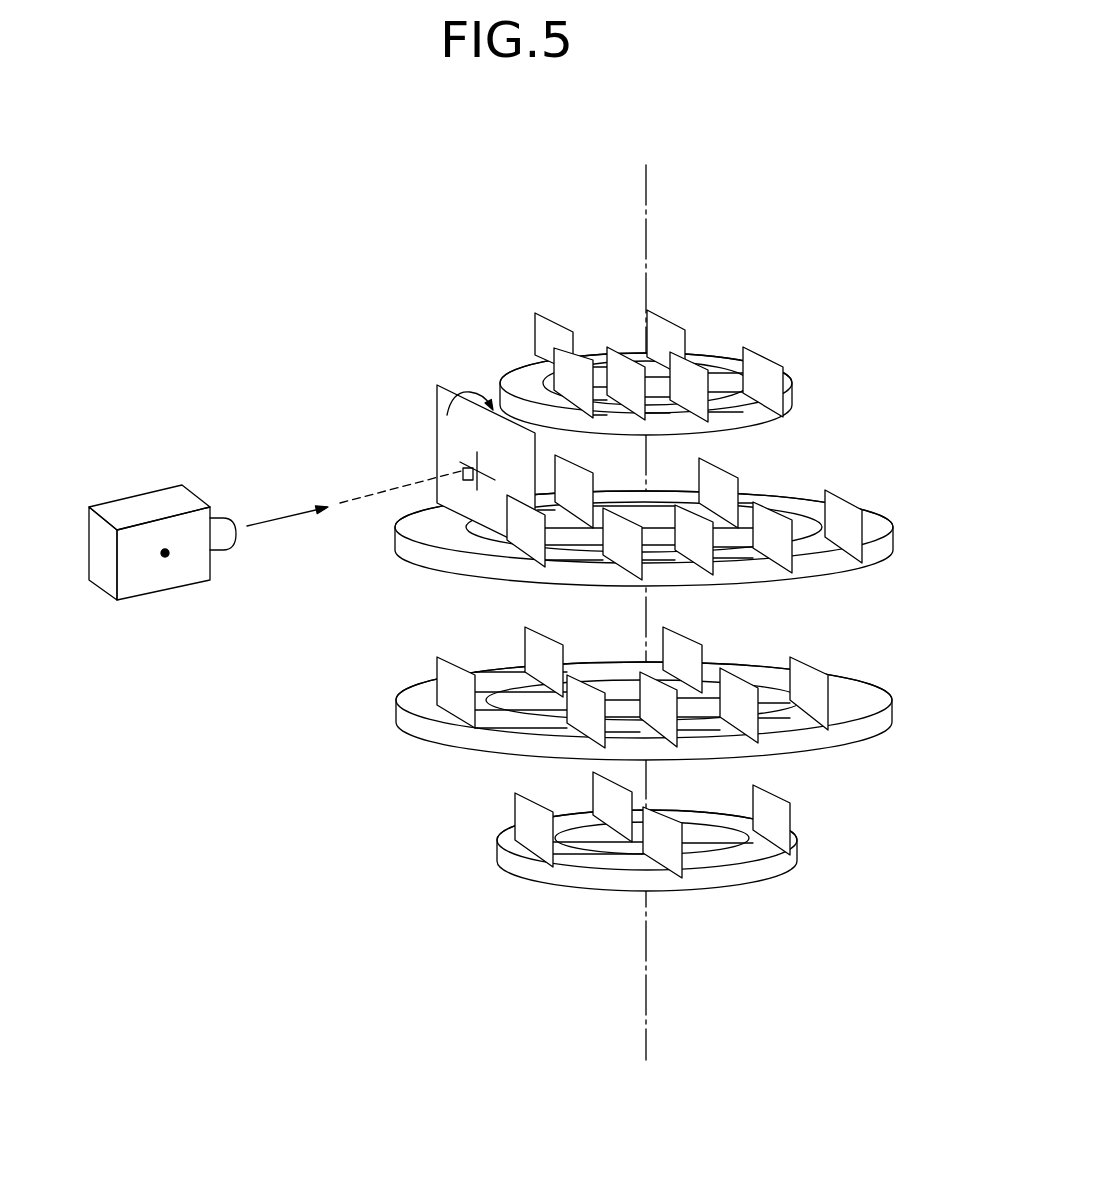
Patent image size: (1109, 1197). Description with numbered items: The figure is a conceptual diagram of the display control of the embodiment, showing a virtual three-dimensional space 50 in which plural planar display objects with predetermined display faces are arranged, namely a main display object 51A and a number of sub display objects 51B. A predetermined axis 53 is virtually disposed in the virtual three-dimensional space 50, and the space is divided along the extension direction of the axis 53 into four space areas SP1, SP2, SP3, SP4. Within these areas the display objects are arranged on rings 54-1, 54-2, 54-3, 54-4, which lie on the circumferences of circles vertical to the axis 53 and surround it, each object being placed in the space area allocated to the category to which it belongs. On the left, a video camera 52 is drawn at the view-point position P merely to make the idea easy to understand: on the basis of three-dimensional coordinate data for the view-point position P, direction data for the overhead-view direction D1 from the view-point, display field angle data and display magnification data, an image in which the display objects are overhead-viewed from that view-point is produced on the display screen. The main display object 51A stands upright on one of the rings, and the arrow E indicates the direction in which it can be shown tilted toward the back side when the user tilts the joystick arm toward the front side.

The virtual three-dimensional space 50 is at (498, 152).
The main display object 51A is at (437, 434).
The sub display object 51B is at (552, 326).
The video camera 52 is at (162, 542).
The axis 53 is at (647, 212).
The ring 54-1 is at (793, 394).
The ring 54-2 is at (887, 555).
The ring 54-3 is at (887, 735).
The ring 54-4 is at (765, 877).
The space area SP1 is at (692, 376).
The space area SP2 is at (648, 494).
The space area SP3 is at (662, 693).
The space area SP4 is at (699, 857).
The arrow E is at (465, 390).
The view-point position P is at (165, 553).
The overhead-view direction D1 is at (282, 520).